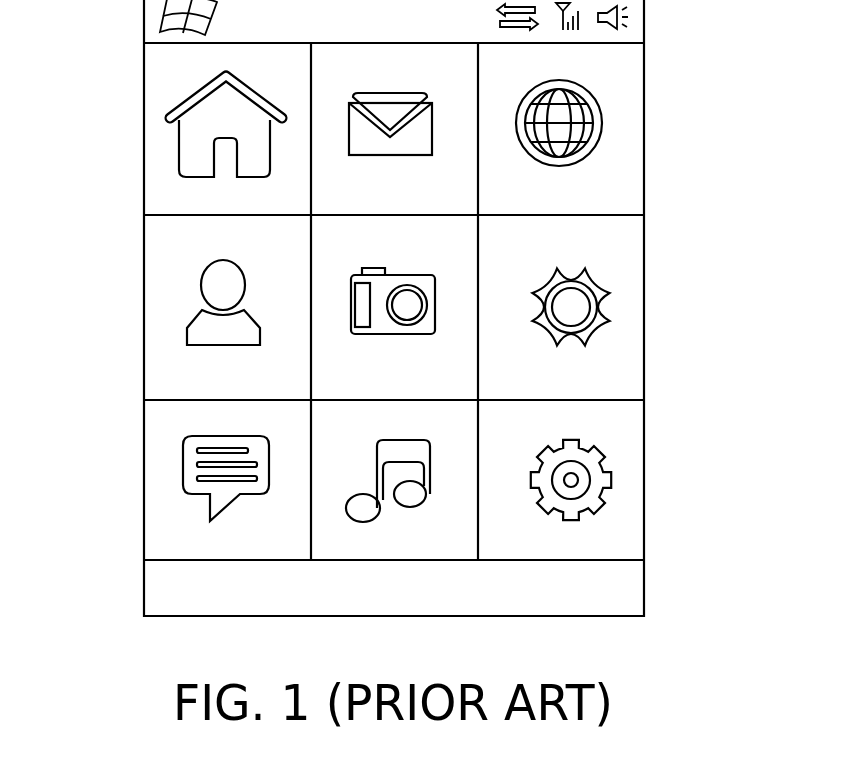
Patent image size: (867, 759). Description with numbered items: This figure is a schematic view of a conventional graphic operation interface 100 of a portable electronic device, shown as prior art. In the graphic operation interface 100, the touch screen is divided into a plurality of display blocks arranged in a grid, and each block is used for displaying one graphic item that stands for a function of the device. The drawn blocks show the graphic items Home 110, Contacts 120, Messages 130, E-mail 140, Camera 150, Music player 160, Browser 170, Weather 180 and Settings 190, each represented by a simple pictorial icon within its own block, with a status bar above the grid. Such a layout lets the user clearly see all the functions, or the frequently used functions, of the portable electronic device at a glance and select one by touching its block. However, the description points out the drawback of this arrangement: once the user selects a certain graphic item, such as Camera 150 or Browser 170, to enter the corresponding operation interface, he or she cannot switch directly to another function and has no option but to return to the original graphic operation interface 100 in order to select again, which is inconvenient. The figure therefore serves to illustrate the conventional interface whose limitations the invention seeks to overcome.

The graphic operation interface 100 is at (645, 490).
The Home 110 is at (160, 163).
The Contacts 120 is at (160, 362).
The Messages 130 is at (160, 538).
The E-mail 140 is at (453, 73).
The Camera 150 is at (453, 244).
The Music player 160 is at (453, 430).
The Browser 170 is at (627, 113).
The Weather 180 is at (627, 353).
The Settings 190 is at (627, 530).